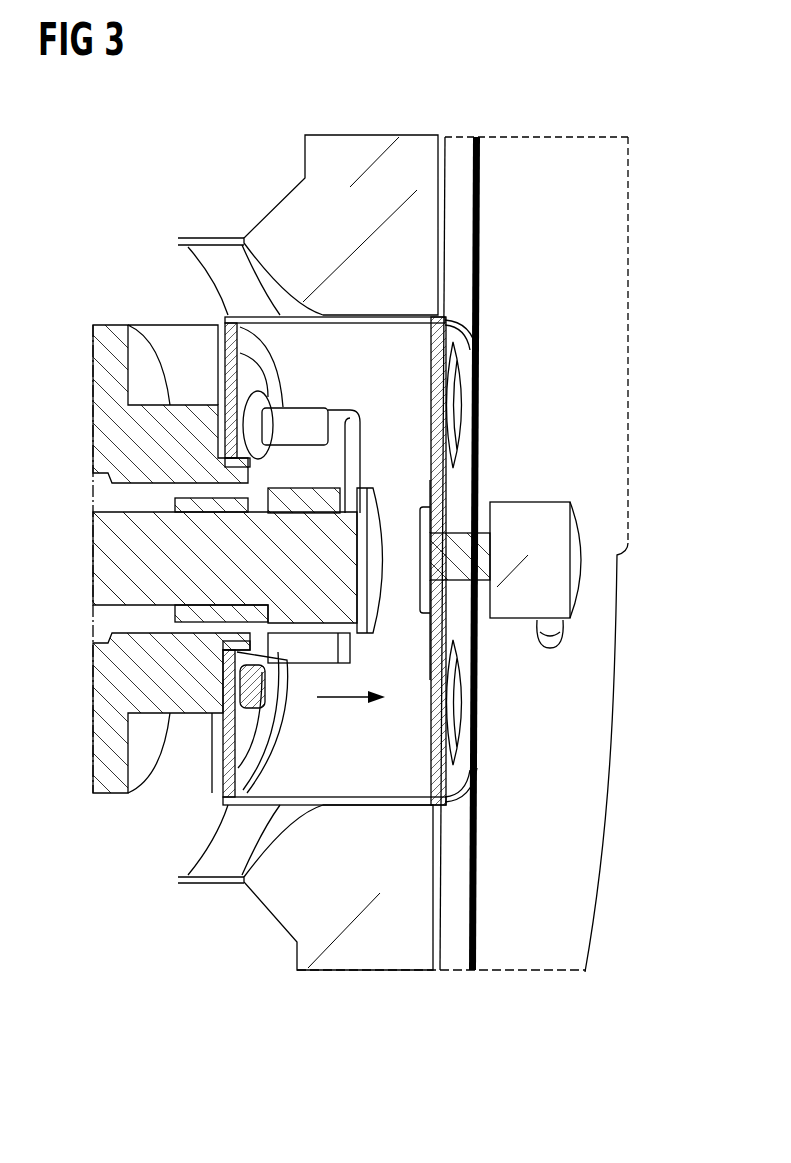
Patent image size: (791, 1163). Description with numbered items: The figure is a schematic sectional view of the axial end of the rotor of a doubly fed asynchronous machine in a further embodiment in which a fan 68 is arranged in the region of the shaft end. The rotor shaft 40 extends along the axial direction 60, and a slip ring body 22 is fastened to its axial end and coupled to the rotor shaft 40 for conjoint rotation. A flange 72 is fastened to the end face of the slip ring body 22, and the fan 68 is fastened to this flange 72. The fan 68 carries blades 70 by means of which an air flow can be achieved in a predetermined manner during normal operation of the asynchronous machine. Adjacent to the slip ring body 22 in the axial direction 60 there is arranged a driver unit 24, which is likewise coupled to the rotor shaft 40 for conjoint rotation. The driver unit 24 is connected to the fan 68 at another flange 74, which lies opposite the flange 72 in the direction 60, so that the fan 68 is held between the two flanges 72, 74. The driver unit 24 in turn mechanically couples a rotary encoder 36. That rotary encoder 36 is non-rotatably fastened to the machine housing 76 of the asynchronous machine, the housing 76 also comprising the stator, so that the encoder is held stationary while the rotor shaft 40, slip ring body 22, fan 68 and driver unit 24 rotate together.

The slip ring body 22 is at (105, 683).
The driver unit 24 is at (463, 508).
The rotary encoder 36 is at (556, 583).
The rotor shaft 40 is at (108, 558).
The axial direction 60 is at (352, 700).
The fan 68 is at (450, 785).
The blades 70 is at (288, 212).
The flange 72 is at (213, 340).
The another flange 74 is at (440, 605).
The machine housing 76 is at (605, 229).